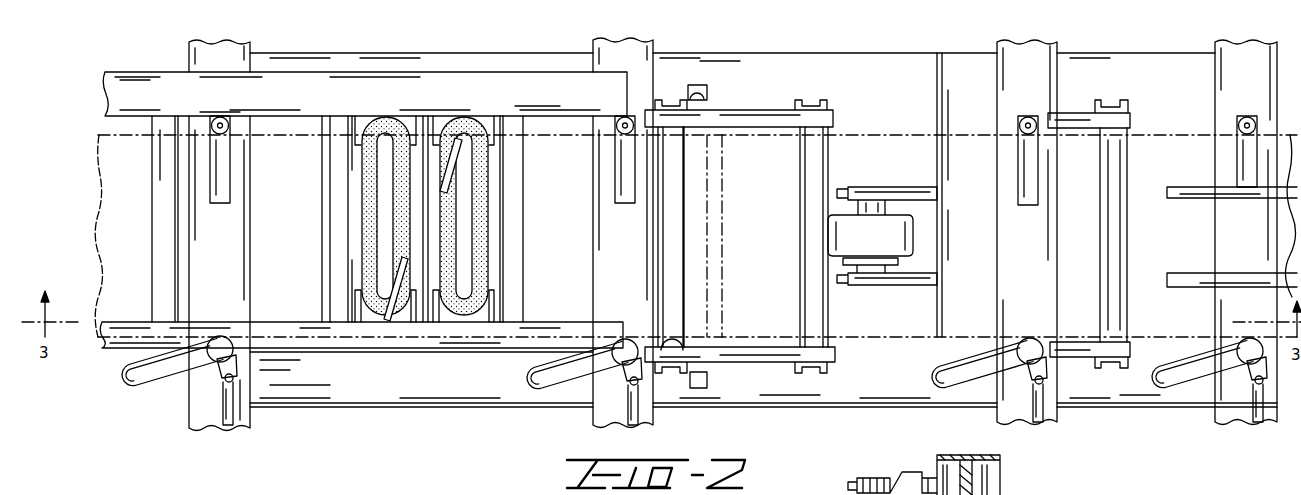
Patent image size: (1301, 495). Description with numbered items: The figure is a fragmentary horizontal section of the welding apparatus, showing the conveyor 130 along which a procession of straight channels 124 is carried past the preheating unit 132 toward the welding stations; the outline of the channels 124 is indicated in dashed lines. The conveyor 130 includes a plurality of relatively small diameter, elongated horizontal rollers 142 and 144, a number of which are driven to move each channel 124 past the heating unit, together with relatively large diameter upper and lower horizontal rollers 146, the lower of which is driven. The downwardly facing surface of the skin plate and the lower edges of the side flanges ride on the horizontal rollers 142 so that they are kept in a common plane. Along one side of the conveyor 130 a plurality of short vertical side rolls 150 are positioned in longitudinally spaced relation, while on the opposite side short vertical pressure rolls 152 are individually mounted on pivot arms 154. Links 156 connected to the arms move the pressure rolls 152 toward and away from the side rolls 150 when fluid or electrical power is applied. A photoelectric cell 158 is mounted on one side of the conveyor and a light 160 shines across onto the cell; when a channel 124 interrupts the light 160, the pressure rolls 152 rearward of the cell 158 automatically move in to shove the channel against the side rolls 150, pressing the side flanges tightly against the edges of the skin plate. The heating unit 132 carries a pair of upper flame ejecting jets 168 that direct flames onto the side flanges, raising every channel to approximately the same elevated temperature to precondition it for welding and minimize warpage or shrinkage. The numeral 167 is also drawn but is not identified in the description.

The straight channel 124 is at (272, 340).
The conveyor 130 is at (115, 357).
The preheating unit 132 is at (435, 84).
The horizontal roller 142 is at (523, 250).
The horizontal roller 144 is at (817, 156).
The horizontal roller 146 is at (870, 226).
The side roll 150 is at (220, 117).
The pressure roll 152 is at (225, 338).
The pivot arm 154 is at (168, 381).
The link 156 is at (237, 424).
The photoelectric cell 158 is at (701, 95).
The light 160 is at (709, 373).
The guide loop 167 is at (452, 323).
The upper flame ejecting jet 168 is at (405, 260).